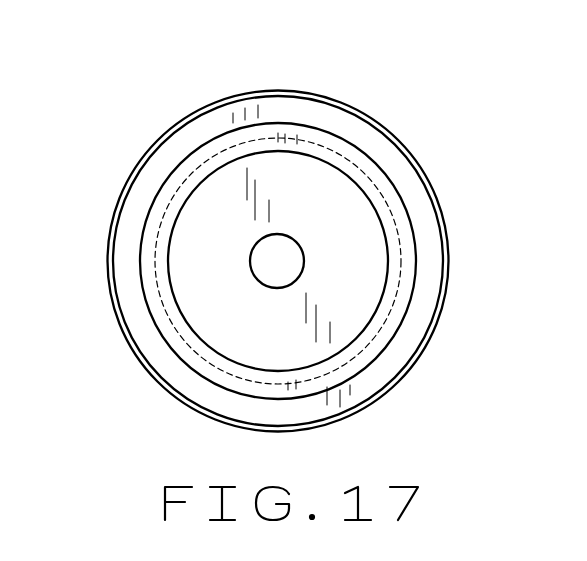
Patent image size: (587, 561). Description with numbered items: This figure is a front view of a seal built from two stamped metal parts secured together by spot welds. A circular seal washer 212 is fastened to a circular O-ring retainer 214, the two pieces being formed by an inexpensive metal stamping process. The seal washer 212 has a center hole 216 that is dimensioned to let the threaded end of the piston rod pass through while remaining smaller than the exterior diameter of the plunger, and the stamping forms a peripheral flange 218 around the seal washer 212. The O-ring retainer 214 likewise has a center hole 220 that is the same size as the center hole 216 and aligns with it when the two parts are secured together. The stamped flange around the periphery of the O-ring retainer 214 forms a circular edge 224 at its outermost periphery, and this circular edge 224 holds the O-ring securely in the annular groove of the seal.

The seal washer 212 is at (365, 138).
The O-ring retainer 214 is at (362, 222).
The center hole 216 is at (278, 250).
The peripheral flange 218 is at (340, 100).
The center hole 220 is at (278, 270).
The circular edge 224 is at (395, 333).